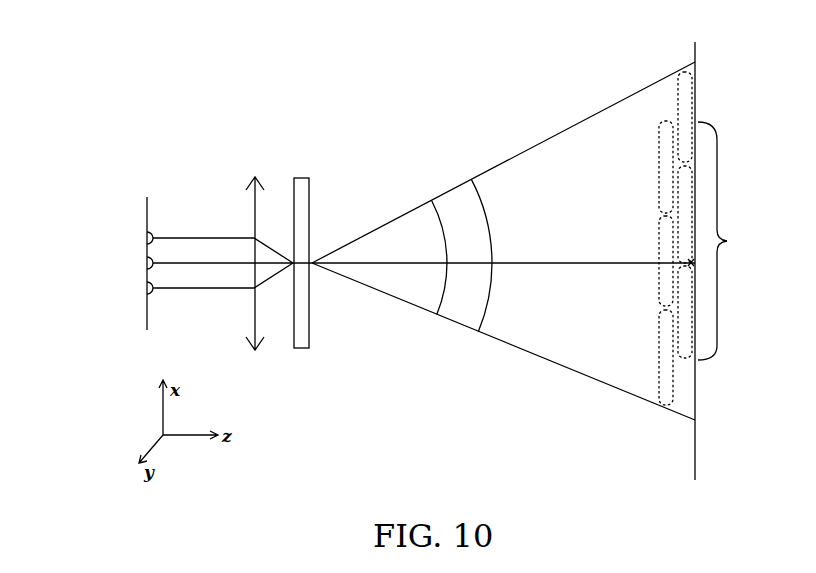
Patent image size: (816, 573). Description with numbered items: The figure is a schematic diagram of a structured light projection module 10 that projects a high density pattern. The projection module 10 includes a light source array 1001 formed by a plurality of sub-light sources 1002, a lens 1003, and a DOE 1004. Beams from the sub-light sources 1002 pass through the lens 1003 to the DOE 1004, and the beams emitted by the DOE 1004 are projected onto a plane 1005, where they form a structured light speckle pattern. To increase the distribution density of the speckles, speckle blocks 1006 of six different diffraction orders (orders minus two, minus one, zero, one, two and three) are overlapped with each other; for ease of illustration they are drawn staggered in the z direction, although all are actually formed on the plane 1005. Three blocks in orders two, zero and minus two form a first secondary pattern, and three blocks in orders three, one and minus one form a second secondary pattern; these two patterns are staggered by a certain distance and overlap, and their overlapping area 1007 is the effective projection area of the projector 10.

The projection module 10 is at (228, 86).
The light source array 1001 is at (147, 209).
The sub-light sources 1002 is at (147, 291).
The lens 1003 is at (255, 209).
The DOE 1004 is at (310, 180).
The plane 1005 is at (694, 56).
The speckle blocks 1006 is at (659, 128).
The overlapping area 1007 is at (736, 241).